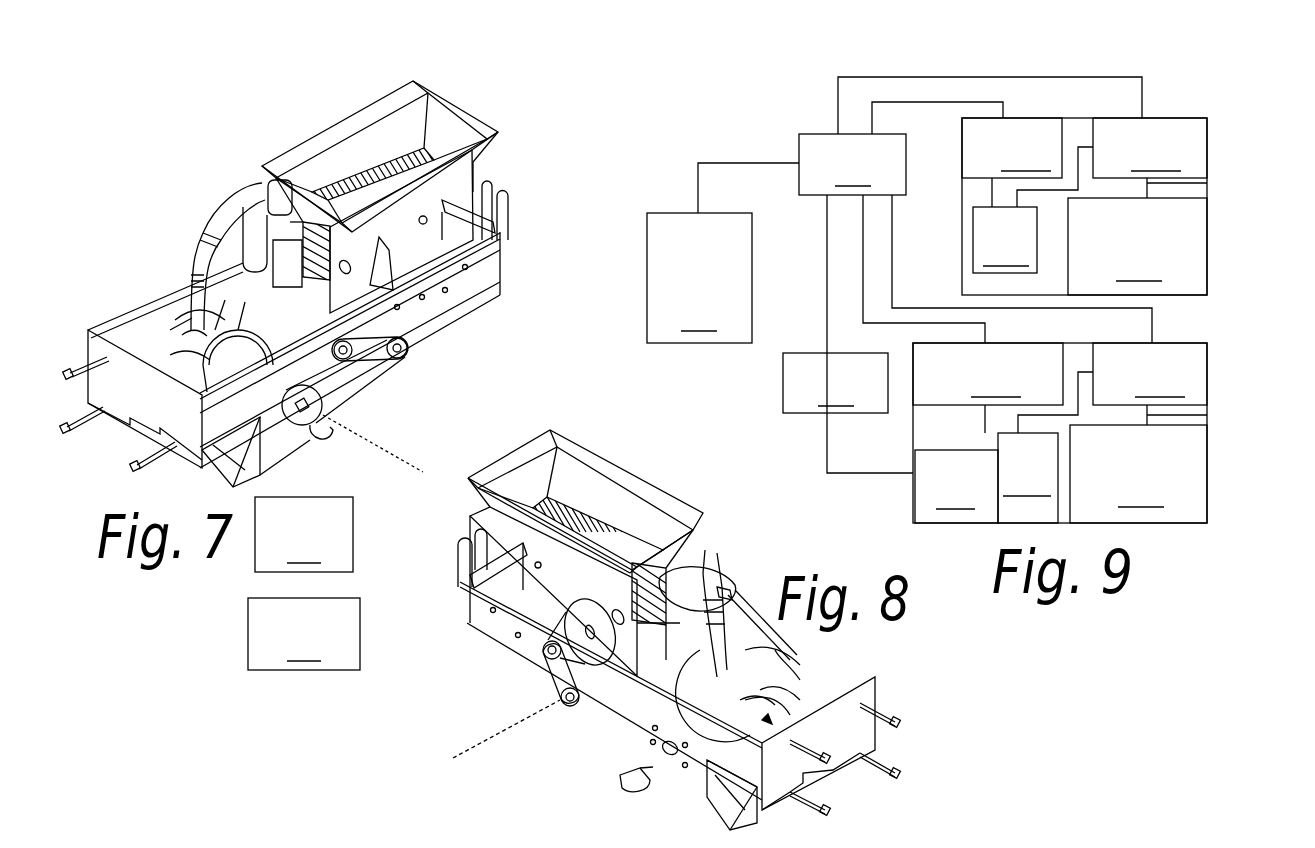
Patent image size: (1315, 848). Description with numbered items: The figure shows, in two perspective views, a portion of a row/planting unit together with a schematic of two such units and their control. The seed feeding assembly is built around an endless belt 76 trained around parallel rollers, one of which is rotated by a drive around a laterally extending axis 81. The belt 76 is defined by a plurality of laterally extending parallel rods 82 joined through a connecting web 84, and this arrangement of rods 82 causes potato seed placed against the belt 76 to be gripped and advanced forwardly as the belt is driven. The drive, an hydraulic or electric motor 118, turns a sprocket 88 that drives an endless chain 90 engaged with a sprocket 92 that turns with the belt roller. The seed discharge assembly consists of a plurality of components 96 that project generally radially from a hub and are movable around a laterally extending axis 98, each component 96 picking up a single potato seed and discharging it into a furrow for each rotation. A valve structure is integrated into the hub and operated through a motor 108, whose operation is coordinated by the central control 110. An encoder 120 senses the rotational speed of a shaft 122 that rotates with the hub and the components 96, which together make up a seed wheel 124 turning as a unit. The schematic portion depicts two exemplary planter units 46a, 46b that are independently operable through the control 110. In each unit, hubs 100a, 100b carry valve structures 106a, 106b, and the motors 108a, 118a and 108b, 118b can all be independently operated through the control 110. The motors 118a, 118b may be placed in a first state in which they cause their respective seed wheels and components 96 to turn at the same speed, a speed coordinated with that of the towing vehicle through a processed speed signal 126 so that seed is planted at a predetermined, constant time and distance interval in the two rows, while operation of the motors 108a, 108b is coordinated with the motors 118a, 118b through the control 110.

In FIG. 9, the planter unit 46a is at (1228, 188).
In FIG. 9, the planter unit 46b is at (1228, 381).
In FIG. 7, the endless belt 76 is at (353, 187).
In FIG. 8, the laterally extending axis 81 is at (485, 743).
In FIG. 7, the rods 82 is at (395, 82).
In FIG. 8, the rods 82 is at (560, 497).
In FIG. 7, the connecting web 84 is at (387, 160).
In FIG. 8, the connecting web 84 is at (600, 520).
In FIG. 8, the sprocket 88 is at (560, 693).
In FIG. 8, the endless chain 90 is at (497, 643).
In FIG. 8, the sprocket 92 is at (597, 600).
In FIG. 8, the components 96 is at (760, 630).
In FIG. 7, the laterally extending axis 98 is at (390, 443).
In FIG. 9, the hub 100a is at (1005, 240).
In FIG. 9, the hub 100b is at (1028, 478).
In FIG. 9, the valve structure 106a is at (1137, 246).
In FIG. 9, the valve structure 106b is at (1138, 474).
In FIG. 7, the motor 108 is at (408, 347).
In FIG. 9, the motor 108a is at (1150, 148).
In FIG. 9, the motor 108b is at (1150, 374).
In FIG. 7, the control 110 is at (303, 598).
In FIG. 9, the control 110 is at (852, 164).
In FIG. 7, the motor 118 is at (303, 497).
In FIG. 9, the motor 118a is at (1012, 148).
In FIG. 9, the motor 118b is at (988, 374).
In FIG. 9, the encoder 120 is at (835, 383).
In FIG. 9, the shaft 122 is at (956, 486).
In FIG. 7, the seed wheel 124 is at (176, 310).
In FIG. 8, the seed wheel 124 is at (770, 725).
In FIG. 9, the speed signal 126 is at (699, 278).